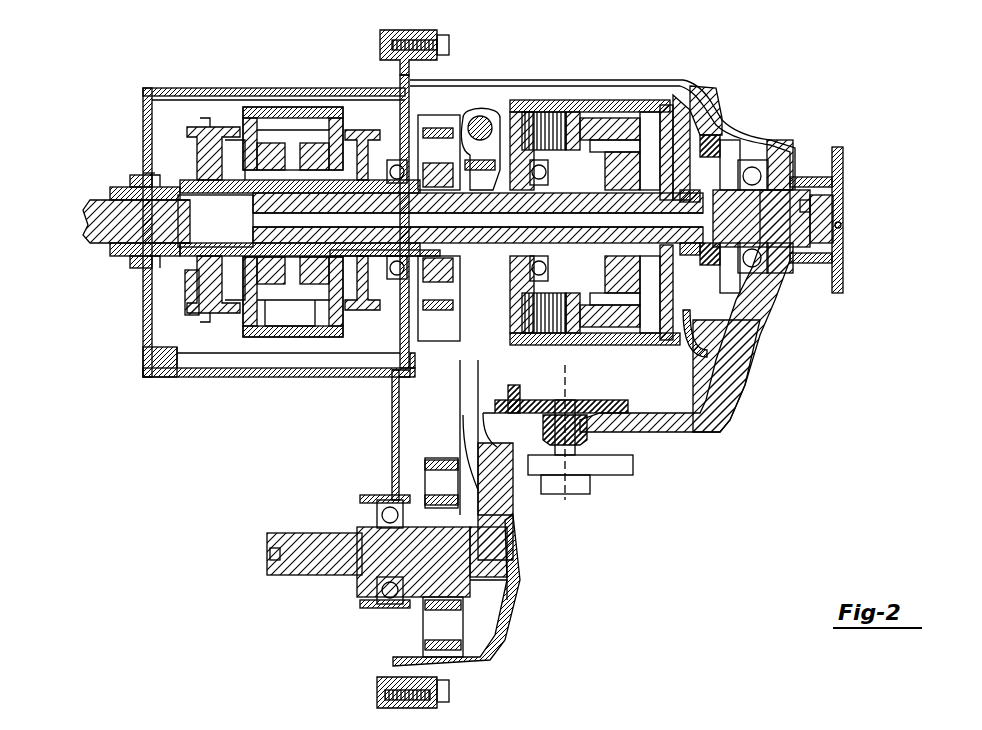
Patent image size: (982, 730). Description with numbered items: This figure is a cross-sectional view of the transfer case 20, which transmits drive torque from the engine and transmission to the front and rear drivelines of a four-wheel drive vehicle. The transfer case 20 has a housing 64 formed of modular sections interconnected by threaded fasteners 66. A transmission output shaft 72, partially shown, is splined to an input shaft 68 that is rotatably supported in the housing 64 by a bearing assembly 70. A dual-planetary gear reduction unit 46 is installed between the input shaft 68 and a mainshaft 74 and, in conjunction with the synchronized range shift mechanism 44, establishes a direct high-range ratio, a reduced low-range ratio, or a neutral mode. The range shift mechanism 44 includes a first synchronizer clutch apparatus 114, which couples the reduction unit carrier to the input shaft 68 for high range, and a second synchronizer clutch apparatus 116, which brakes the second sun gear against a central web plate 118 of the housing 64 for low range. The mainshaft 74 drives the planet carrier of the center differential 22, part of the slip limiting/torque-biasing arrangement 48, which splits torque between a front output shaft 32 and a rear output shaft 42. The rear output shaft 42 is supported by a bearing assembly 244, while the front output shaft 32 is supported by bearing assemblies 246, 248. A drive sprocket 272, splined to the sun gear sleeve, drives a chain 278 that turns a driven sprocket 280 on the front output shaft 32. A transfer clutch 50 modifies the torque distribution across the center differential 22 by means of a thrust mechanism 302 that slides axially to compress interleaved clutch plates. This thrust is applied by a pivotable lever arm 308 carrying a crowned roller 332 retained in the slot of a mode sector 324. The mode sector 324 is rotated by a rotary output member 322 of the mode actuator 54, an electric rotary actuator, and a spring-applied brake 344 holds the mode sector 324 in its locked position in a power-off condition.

The transfer case 20 is at (832, 100).
The center differential 22 is at (670, 103).
The front output shaft 32 is at (305, 565).
The rear output shaft 42 is at (848, 183).
The synchronized range shift mechanism 44 is at (181, 123).
The dual-planetary gear reduction unit 46 is at (335, 54).
The slip limiting/torque-biasing arrangement 48 is at (662, 96).
The transfer clutch 50 is at (637, 96).
The mode actuator 54 is at (630, 464).
The housing 64 is at (240, 374).
The threaded fasteners 66 is at (432, 62).
The input shaft 68 is at (117, 187).
The bearing assembly 70 is at (147, 173).
The transmission output shaft 72 is at (100, 230).
The mainshaft 74 is at (693, 327).
The first synchronizer clutch apparatus 114 is at (190, 293).
The second synchronizer clutch apparatus 116 is at (393, 126).
The central web plate 118 is at (363, 367).
The bearing assembly 244 is at (760, 140).
The bearing assembly 246 is at (387, 497).
The bearing assembly 248 is at (507, 602).
The drive sprocket 272 is at (503, 128).
The chain 278 is at (443, 420).
The driven sprocket 280 is at (440, 625).
The thrust mechanism 302 is at (565, 109).
The lever arm 308 is at (395, 400).
The rotary output member 322 is at (570, 402).
The mode sector 324 is at (614, 402).
The crowned roller 332 is at (537, 402).
The brake 344 is at (583, 487).